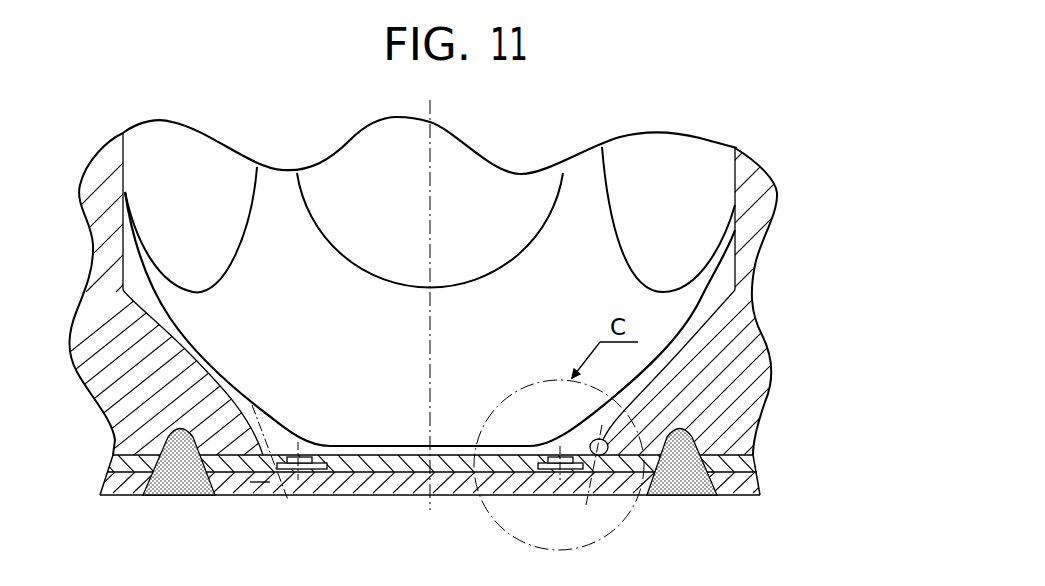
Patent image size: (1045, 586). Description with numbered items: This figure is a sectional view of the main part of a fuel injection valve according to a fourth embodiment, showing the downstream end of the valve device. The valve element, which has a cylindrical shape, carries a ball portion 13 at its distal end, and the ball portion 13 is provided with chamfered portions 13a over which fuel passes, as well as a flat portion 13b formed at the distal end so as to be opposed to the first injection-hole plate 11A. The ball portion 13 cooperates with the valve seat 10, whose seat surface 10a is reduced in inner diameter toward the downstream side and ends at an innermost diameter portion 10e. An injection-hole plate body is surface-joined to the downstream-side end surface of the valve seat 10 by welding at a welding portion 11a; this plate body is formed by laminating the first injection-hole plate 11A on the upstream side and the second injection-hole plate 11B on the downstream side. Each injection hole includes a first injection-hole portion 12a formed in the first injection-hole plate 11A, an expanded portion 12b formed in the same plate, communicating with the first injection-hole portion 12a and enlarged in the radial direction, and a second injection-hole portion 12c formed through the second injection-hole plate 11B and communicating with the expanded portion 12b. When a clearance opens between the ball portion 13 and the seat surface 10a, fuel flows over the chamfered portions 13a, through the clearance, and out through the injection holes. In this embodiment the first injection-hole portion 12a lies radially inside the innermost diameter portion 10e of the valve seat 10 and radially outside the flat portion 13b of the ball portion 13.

The valve seat 10 is at (745, 318).
The seat surface 10a is at (663, 350).
The innermost diameter portion 10e is at (607, 452).
The first injection-hole plate 11A is at (747, 463).
The second injection-hole plate 11B is at (745, 483).
The welding portion 11a is at (178, 496).
The first injection-hole portion 12a is at (328, 467).
The expanded portion 12b is at (318, 464).
The second injection-hole portion 12c is at (262, 482).
The ball portion 13 is at (570, 207).
The chamfered portions 13a is at (700, 190).
The flat portion 13b is at (453, 447).